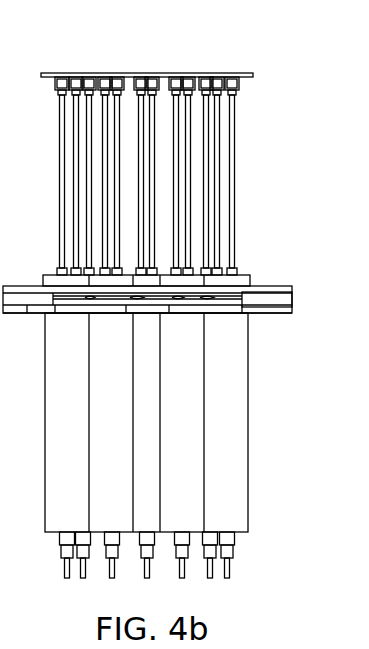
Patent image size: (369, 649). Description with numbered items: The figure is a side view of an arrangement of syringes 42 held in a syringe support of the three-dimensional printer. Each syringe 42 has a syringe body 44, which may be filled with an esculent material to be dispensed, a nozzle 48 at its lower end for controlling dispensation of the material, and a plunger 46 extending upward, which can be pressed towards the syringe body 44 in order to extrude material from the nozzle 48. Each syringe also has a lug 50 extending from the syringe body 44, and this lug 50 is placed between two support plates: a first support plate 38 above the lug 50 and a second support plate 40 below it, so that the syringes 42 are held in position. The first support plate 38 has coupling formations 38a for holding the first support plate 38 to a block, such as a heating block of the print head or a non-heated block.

The first support plate 38 is at (263, 287).
The coupling formations 38a is at (288, 300).
The second support plate 40 is at (262, 314).
The syringe 42 is at (197, 445).
The syringe body 44 is at (228, 505).
The plunger 46 is at (227, 76).
The nozzle 48 is at (233, 558).
The lug 50 is at (208, 298).